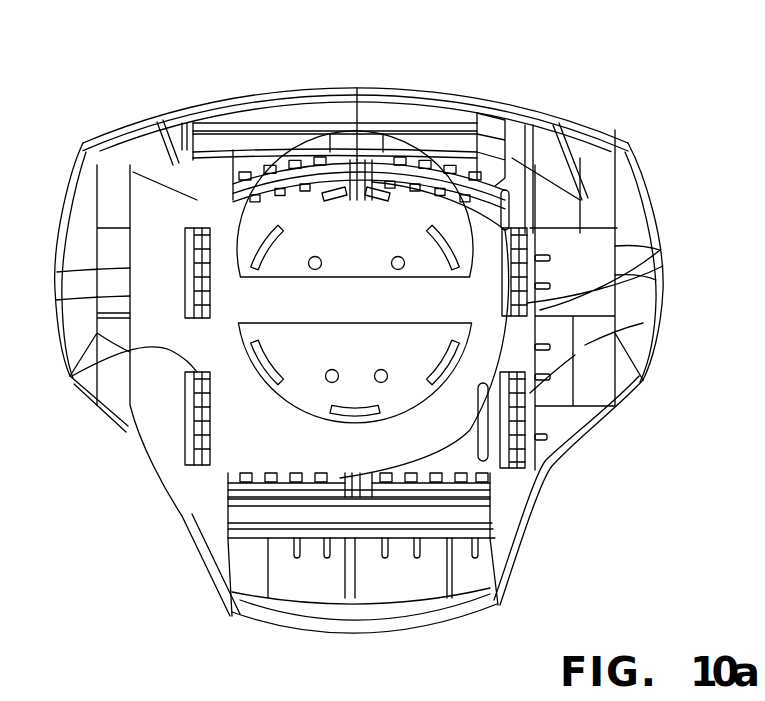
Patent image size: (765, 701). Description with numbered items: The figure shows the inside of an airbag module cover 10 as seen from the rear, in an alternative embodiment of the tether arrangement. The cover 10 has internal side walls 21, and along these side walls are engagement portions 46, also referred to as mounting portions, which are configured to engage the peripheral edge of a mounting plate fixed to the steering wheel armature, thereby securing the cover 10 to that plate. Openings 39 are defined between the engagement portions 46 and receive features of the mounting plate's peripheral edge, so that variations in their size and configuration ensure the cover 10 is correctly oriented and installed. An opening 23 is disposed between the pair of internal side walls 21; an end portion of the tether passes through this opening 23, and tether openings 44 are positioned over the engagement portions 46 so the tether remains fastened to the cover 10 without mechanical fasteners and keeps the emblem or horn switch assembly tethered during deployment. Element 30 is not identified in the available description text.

The cover 10 is at (545, 498).
The internal side walls 21 is at (428, 137).
The opening 23 is at (233, 193).
The connecting strip with clips 30 is at (270, 477).
The openings 39 is at (72, 378).
The openings of the tether 44 is at (197, 230).
The engagement portions 46 is at (265, 165).